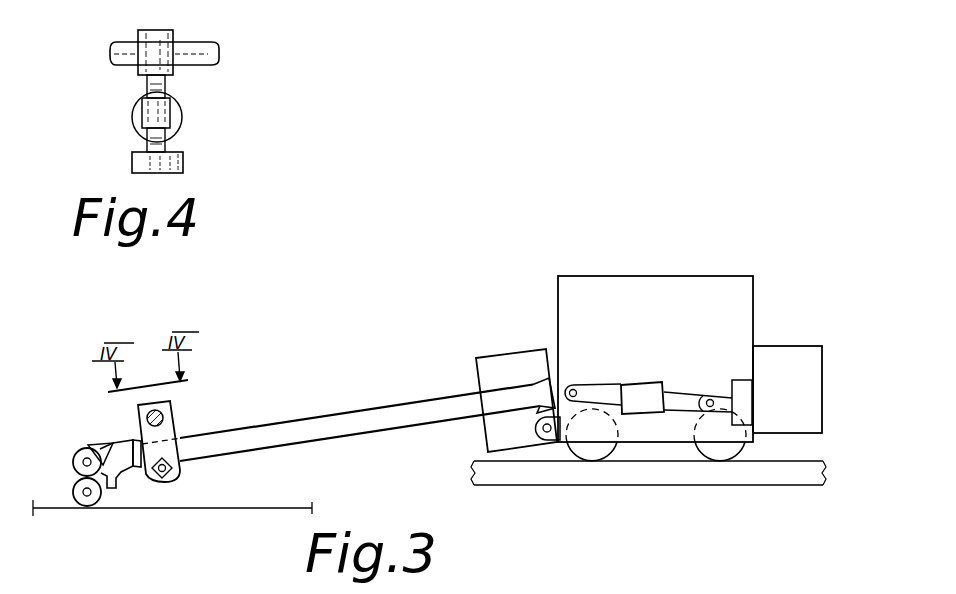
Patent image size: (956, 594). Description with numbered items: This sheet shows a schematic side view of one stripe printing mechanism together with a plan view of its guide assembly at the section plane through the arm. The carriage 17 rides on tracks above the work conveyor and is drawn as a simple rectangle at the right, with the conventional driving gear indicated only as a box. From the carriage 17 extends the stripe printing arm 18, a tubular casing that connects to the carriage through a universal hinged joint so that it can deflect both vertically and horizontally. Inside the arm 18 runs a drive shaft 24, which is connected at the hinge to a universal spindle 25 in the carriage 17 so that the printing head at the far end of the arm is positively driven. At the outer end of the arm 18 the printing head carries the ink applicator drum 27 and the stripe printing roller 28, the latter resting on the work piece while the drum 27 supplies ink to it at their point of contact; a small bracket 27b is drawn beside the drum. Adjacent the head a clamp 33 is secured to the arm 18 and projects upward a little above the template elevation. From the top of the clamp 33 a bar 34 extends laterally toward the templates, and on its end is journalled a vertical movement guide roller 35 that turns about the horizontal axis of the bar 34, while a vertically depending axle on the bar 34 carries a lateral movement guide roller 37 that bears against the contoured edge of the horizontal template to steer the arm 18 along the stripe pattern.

In FIG. 3, the carriage 17 is at (665, 313).
In FIG. 4, the stripe printing arm 18 is at (219, 62).
In FIG. 3, the stripe printing arm 18 is at (360, 430).
In FIG. 3, the drive shaft 24 is at (560, 388).
In FIG. 3, the universal spindle 25 is at (607, 393).
In FIG. 3, the ink applicator drum 27 is at (73, 462).
In FIG. 3, the wheel bracket 27b is at (98, 444).
In FIG. 3, the stripe printing roller 28 is at (73, 492).
In FIG. 4, the clamp 33 is at (140, 70).
In FIG. 3, the clamp 33 is at (177, 478).
In FIG. 4, the bar 34 is at (167, 90).
In FIG. 3, the bar 34 is at (165, 414).
In FIG. 4, the vertical movement guide roller 35 is at (180, 151).
In FIG. 4, the lateral movement guide roller 37 is at (133, 117).